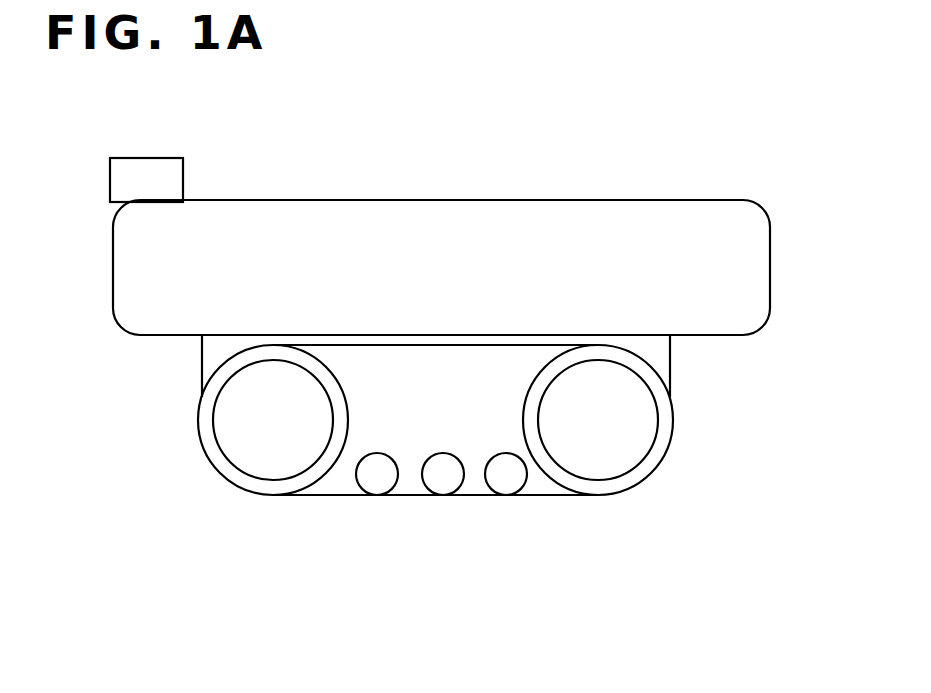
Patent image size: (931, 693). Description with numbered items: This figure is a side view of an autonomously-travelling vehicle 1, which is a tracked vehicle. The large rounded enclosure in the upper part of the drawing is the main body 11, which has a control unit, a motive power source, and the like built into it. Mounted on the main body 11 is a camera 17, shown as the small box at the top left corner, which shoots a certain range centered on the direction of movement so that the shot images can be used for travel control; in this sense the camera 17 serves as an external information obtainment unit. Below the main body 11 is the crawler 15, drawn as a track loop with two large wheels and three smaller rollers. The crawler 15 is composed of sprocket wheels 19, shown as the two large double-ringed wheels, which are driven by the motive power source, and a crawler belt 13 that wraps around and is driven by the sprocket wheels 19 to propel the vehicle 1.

The autonomously-travelling vehicle 1 is at (640, 112).
The main body 11 is at (440, 200).
The crawler belt 13 is at (438, 495).
The crawler 15 is at (675, 420).
The camera 17 is at (183, 181).
The sprocket wheels 19 is at (645, 457).